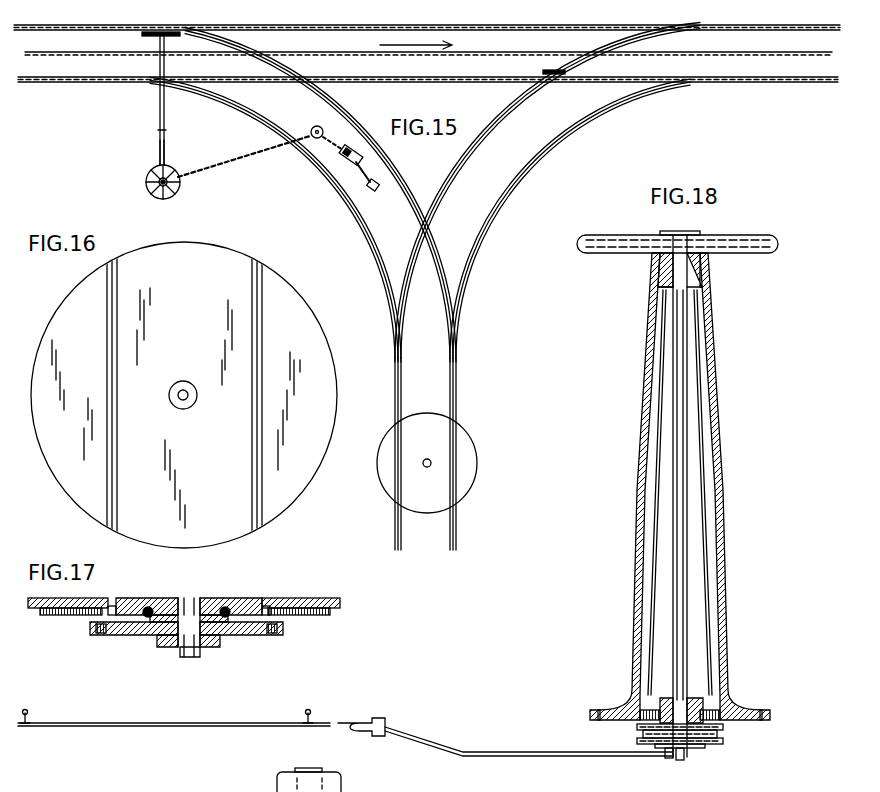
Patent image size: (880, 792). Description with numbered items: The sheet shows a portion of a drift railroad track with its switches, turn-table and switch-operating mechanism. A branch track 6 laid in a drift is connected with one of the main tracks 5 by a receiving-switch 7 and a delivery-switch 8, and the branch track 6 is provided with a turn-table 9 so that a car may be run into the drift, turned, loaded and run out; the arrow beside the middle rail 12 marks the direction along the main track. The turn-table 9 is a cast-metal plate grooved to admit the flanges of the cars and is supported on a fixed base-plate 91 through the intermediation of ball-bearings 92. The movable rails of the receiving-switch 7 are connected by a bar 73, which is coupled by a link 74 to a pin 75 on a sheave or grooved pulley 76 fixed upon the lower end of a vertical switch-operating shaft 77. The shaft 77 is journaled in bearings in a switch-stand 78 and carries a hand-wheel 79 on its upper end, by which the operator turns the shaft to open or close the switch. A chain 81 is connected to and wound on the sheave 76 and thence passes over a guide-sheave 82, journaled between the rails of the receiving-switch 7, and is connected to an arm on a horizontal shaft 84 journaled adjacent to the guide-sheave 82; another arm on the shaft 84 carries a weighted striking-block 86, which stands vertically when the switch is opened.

In FIG. 15, the main track 5 is at (358, 83).
In FIG. 15, the third rail 12 is at (459, 50).
In FIG. 15, the branch track 6 is at (437, 454).
In FIG. 15, the receiving-switch 7 is at (275, 219).
In FIG. 18, the receiving-switch 7 is at (166, 705).
In FIG. 15, the delivery-switch 8 is at (570, 218).
In FIG. 15, the turn-table 9 is at (436, 463).
In FIG. 16, the turn-table 9 is at (184, 395).
In FIG. 17, the turn-table 9 is at (228, 598).
In FIG. 15, the bar 73 is at (158, 110).
In FIG. 18, the bar 73 is at (174, 739).
In FIG. 15, the link 74 is at (167, 152).
In FIG. 18, the link 74 is at (505, 737).
In FIG. 18, the pin 75 is at (667, 763).
In FIG. 18, the sheave 76 is at (694, 729).
In FIG. 18, the switch-operating shaft 77 is at (675, 672).
In FIG. 18, the switch-stand 78 is at (680, 486).
In FIG. 18, the hand-wheel 79 is at (676, 257).
In FIG. 15, the chain 81 is at (212, 175).
In FIG. 15, the guide-sheave 82 is at (317, 126).
In FIG. 15, the horizontal shaft 84 is at (382, 176).
In FIG. 18, the weighted striking-block 86 is at (289, 780).
In FIG. 17, the base-plate 91 is at (238, 634).
In FIG. 17, the ball-bearings 92 is at (148, 606).